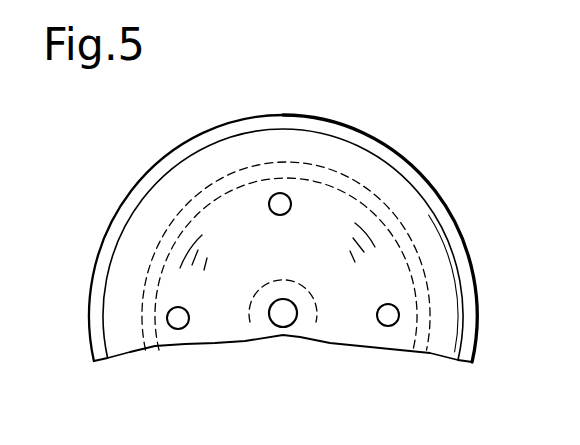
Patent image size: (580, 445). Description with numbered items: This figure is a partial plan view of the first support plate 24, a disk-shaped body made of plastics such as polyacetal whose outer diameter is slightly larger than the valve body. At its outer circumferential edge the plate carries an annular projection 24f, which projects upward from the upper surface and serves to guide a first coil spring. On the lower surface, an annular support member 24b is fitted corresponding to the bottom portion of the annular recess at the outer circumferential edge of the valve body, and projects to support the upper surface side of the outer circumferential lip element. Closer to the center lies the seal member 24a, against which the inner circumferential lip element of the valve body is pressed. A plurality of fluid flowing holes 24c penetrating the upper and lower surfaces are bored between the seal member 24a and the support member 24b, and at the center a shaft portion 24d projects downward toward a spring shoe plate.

The first support plate 24 is at (327, 244).
The seal member 24a is at (338, 328).
The annular support member 24b is at (402, 233).
The fluid flowing holes 24c is at (284, 207).
The shaft portion 24d is at (271, 334).
The annular projection 24f is at (475, 283).